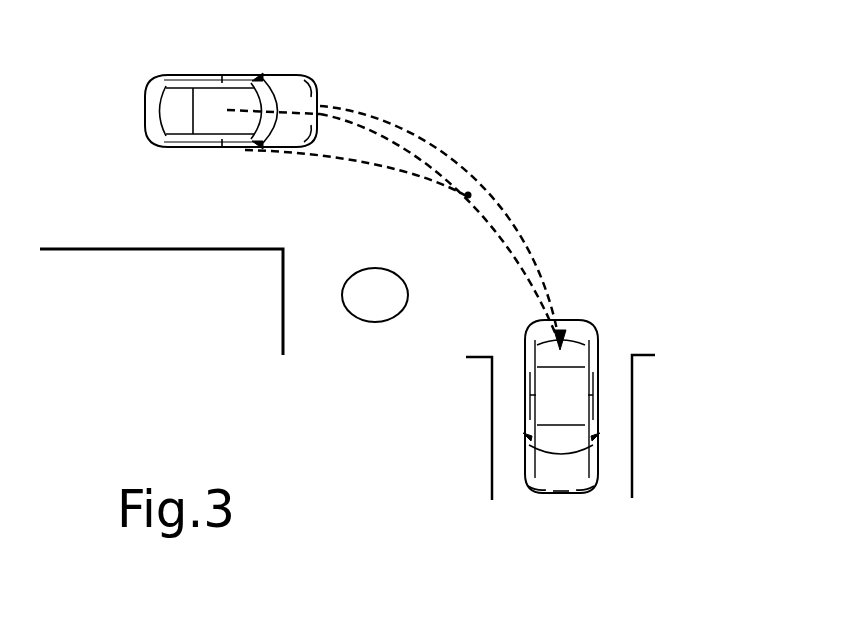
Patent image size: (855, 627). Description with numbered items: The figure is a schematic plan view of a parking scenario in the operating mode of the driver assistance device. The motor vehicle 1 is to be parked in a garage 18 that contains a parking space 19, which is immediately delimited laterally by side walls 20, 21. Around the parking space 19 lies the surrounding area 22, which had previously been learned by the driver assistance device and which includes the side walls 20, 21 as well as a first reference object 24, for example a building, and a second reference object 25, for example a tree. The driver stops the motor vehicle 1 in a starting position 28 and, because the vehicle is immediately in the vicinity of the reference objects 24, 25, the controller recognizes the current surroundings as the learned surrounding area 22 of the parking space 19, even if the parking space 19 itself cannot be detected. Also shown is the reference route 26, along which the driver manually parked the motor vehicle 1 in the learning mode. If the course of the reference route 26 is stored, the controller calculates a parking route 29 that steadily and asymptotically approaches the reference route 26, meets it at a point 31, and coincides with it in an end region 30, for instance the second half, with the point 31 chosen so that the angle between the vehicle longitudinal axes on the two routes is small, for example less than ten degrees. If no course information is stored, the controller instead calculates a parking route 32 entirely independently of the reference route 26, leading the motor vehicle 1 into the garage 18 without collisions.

The motor vehicle 1 is at (298, 76).
The garage 18 is at (635, 327).
The parking space 19 is at (611, 481).
The side wall 20 is at (492, 465).
The side wall 21 is at (633, 465).
The surrounding area 22 is at (412, 451).
The first reference object 24 is at (257, 248).
The second reference object 25 is at (381, 322).
The reference route 26 is at (350, 157).
The starting position 28 is at (166, 71).
The parking route 29 is at (390, 144).
The end region 30 is at (501, 250).
The point 31 is at (466, 197).
The parking route 32 is at (473, 167).